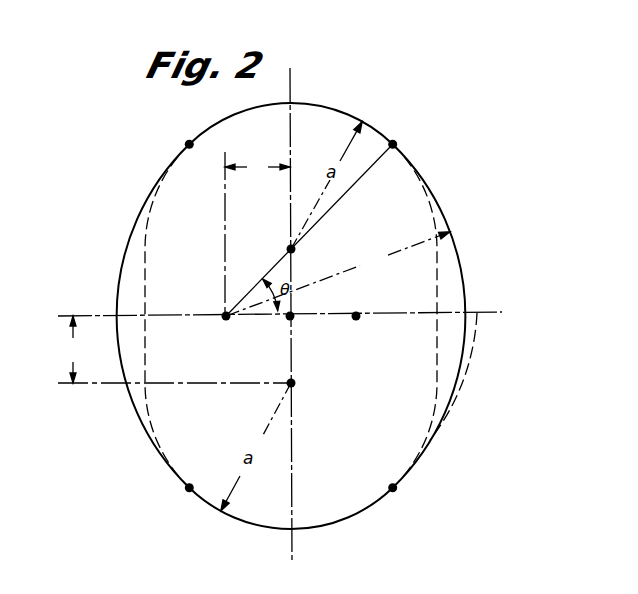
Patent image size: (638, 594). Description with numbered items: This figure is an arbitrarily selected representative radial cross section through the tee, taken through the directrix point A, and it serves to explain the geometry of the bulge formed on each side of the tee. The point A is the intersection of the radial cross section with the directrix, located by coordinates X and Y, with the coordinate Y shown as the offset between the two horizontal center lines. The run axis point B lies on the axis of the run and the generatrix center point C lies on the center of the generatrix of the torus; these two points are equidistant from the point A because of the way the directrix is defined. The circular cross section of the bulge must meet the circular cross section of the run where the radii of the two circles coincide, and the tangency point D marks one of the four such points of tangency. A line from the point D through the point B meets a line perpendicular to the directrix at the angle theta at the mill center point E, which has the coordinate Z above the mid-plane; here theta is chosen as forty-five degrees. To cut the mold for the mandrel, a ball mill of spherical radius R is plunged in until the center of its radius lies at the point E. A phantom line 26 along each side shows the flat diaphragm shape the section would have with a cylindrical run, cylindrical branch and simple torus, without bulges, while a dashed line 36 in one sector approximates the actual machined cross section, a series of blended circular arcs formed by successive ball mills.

The phantom line 26 is at (146, 258).
The dashed line 36 is at (472, 353).
The Point A is at (293, 319).
The Point B is at (296, 248).
The Point C is at (294, 385).
The Point D is at (398, 147).
The Point E is at (224, 314).
The spherical radius R is at (338, 274).
The coordinate Y is at (175, 349).
The coordinate Z is at (257, 234).